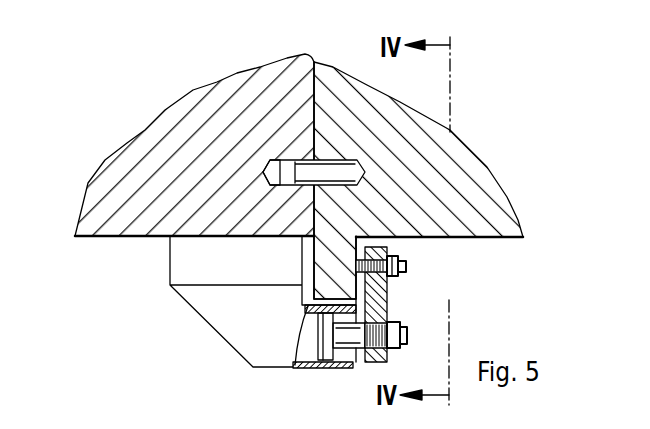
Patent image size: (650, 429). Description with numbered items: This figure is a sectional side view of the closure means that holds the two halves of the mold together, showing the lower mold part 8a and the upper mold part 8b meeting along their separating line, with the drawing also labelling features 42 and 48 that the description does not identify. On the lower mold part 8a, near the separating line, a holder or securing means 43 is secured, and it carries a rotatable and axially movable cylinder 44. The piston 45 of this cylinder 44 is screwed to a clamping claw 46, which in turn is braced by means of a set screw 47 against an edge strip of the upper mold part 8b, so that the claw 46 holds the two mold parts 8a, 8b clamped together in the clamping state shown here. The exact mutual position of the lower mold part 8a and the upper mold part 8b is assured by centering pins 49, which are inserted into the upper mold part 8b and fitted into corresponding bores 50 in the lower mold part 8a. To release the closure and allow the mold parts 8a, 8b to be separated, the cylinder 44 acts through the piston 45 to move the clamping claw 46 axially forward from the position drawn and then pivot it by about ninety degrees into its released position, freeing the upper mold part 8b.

The lower mold part 8a is at (112, 176).
The upper mold part 8b is at (477, 168).
The parting joint 42 is at (322, 62).
The securing means 43 is at (180, 268).
The rotatable and axially movable cylinder 44 is at (345, 362).
The piston 45 is at (322, 340).
The clamping claw 46 is at (378, 309).
The set screw 47 is at (405, 266).
The tongue 48 is at (327, 278).
The centering pin 49 is at (300, 160).
The bore 50 is at (266, 170).